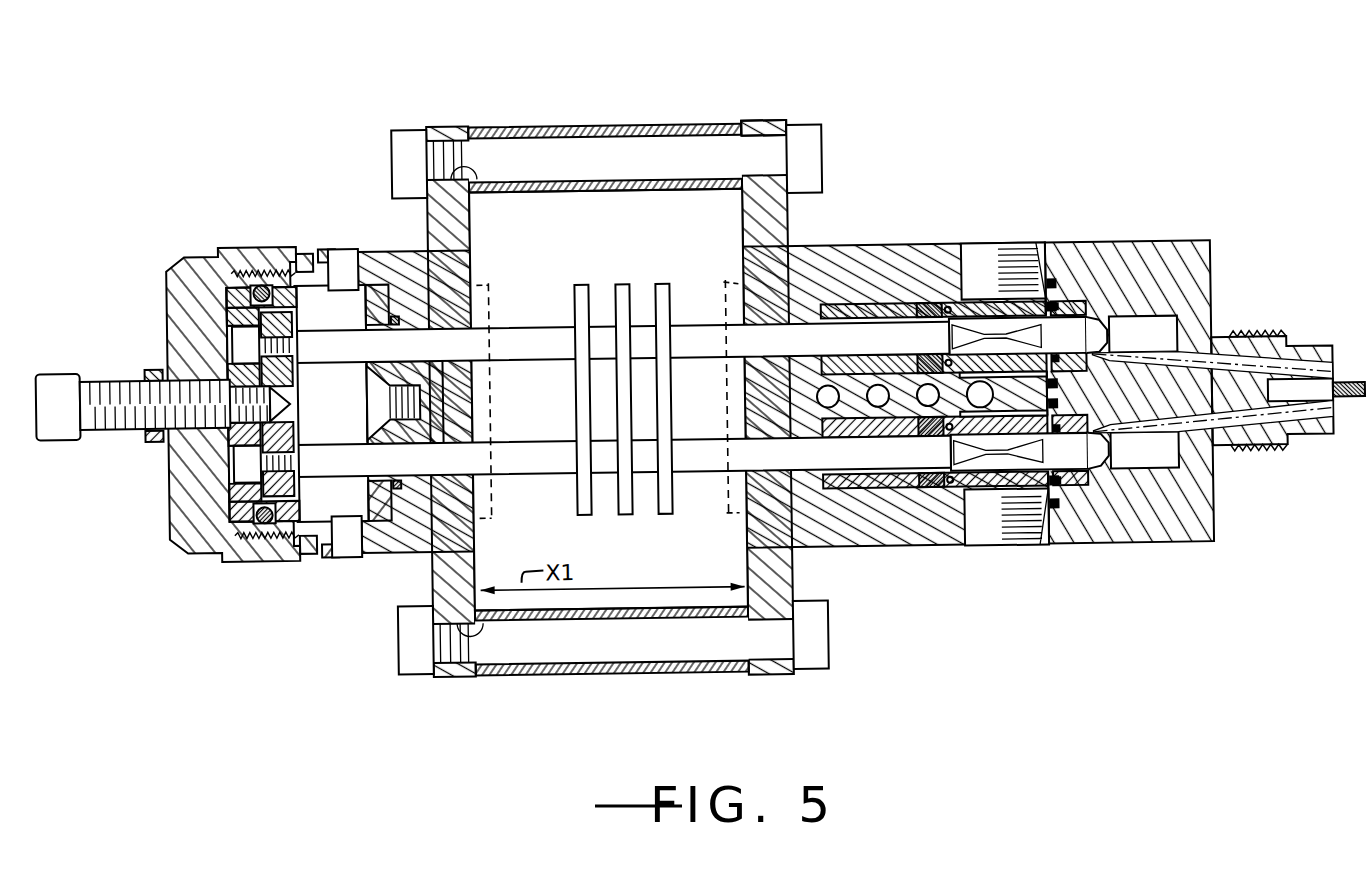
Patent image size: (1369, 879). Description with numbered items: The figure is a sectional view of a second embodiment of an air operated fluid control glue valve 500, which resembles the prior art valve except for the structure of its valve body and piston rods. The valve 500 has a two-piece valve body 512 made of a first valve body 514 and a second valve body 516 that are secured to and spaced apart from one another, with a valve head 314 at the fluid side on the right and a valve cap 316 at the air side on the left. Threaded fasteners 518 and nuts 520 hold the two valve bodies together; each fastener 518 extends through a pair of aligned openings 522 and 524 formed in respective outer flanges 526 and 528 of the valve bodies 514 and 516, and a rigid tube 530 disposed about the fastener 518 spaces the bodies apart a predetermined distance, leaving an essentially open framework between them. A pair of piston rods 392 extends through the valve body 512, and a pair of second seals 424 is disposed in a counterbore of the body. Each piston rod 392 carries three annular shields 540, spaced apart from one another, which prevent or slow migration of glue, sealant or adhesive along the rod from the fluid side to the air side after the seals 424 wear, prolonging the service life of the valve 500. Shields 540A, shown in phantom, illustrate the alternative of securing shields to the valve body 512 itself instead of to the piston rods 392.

The fluid control valve 500 is at (1007, 117).
The two-piece valve body 512 is at (880, 242).
The valve head 314 is at (1173, 240).
The valve cap 316 is at (229, 235).
The piston rods 392 is at (528, 340).
The second seals 424 is at (937, 303).
The first valve body 514 is at (498, 397).
The second valve body 516 is at (755, 530).
The threaded fasteners 518 is at (813, 135).
The nuts 520 is at (408, 128).
The opening 522 is at (489, 185).
The opening 524 is at (758, 170).
The outer flange 526 is at (470, 122).
The outer flange 528 is at (770, 120).
The rigid tube 530 is at (591, 123).
The shields 540 is at (623, 273).
The shields 540A is at (478, 282).